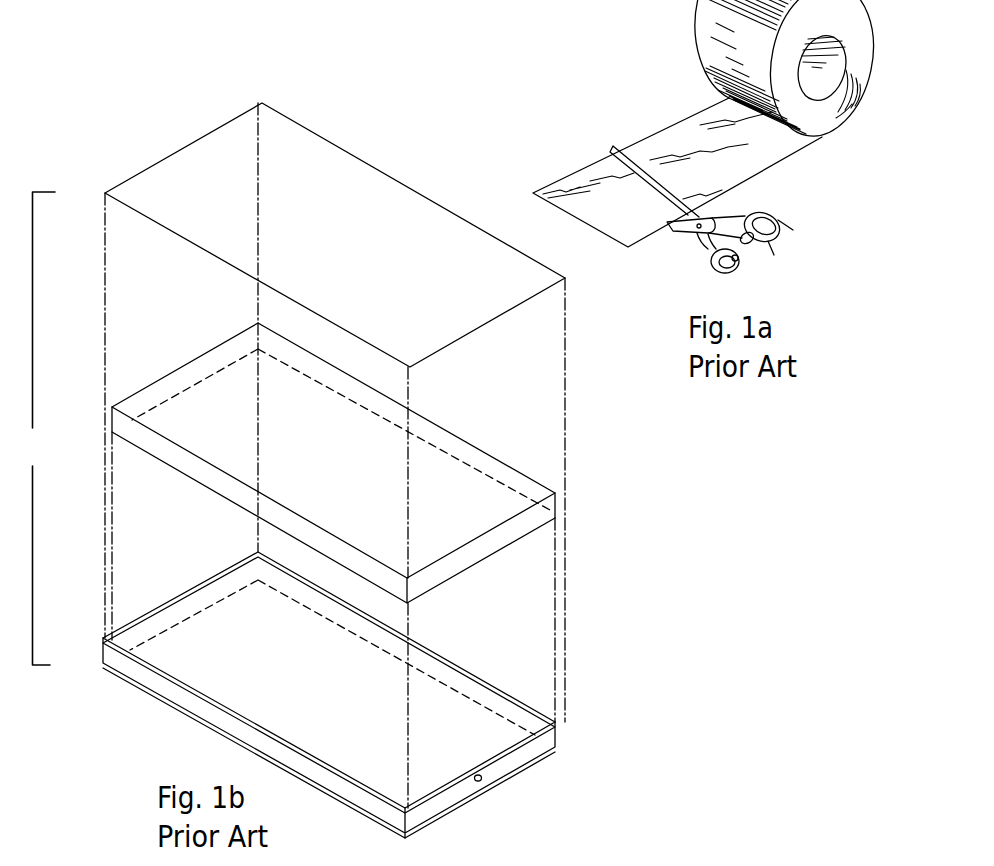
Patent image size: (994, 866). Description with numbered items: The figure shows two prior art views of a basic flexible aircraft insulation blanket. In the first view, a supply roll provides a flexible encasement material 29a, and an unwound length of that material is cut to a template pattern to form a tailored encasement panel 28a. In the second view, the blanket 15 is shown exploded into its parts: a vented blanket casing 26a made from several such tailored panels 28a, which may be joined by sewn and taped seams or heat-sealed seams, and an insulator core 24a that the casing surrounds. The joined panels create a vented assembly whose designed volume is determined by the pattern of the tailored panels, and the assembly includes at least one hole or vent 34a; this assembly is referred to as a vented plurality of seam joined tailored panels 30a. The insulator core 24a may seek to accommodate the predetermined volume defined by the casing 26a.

In FIG. 1B, the blanket 15 is at (44, 459).
In FIG. 1B, the insulator core 24a is at (333, 463).
In FIG. 1B, the vented blanket casing 26a is at (335, 403).
In FIG. 1A, the tailored encasement panel 28a is at (628, 250).
In FIG. 1A, the flexible encasement material 29a is at (797, 157).
In FIG. 1B, the vented plurality of seam joined tailored panels 30a is at (347, 790).
In FIG. 1B, the vent 34a is at (477, 781).